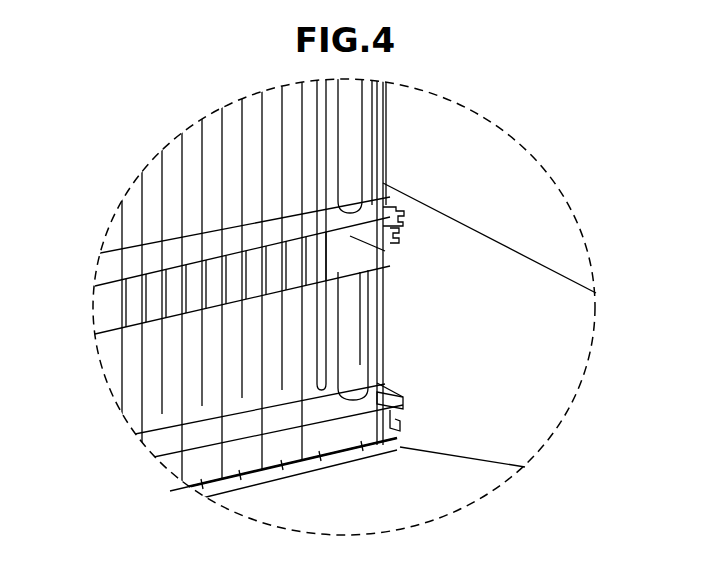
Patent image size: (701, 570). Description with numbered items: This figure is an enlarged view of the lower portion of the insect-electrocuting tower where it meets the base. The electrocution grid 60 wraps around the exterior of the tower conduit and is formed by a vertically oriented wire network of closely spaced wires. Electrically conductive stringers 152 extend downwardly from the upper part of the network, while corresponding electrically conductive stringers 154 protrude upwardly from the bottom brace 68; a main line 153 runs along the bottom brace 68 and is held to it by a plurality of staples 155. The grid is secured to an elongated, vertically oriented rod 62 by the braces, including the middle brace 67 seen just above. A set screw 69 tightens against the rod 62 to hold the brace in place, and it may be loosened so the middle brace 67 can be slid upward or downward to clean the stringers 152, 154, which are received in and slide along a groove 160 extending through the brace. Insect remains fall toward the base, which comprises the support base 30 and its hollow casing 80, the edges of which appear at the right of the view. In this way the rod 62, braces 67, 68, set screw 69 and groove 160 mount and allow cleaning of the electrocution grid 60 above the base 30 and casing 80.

The support base 30 is at (512, 250).
The electrocution grid 60 is at (95, 243).
The rod 62 is at (365, 150).
The middle brace 67 is at (400, 216).
The bottom brace 68 is at (404, 403).
The set screw 69 is at (402, 237).
The casing 80 is at (470, 458).
The stringer 152 is at (363, 343).
The main line 153 is at (352, 448).
The stringer 154 is at (378, 393).
The staple 155 is at (282, 466).
The groove 160 is at (348, 235).